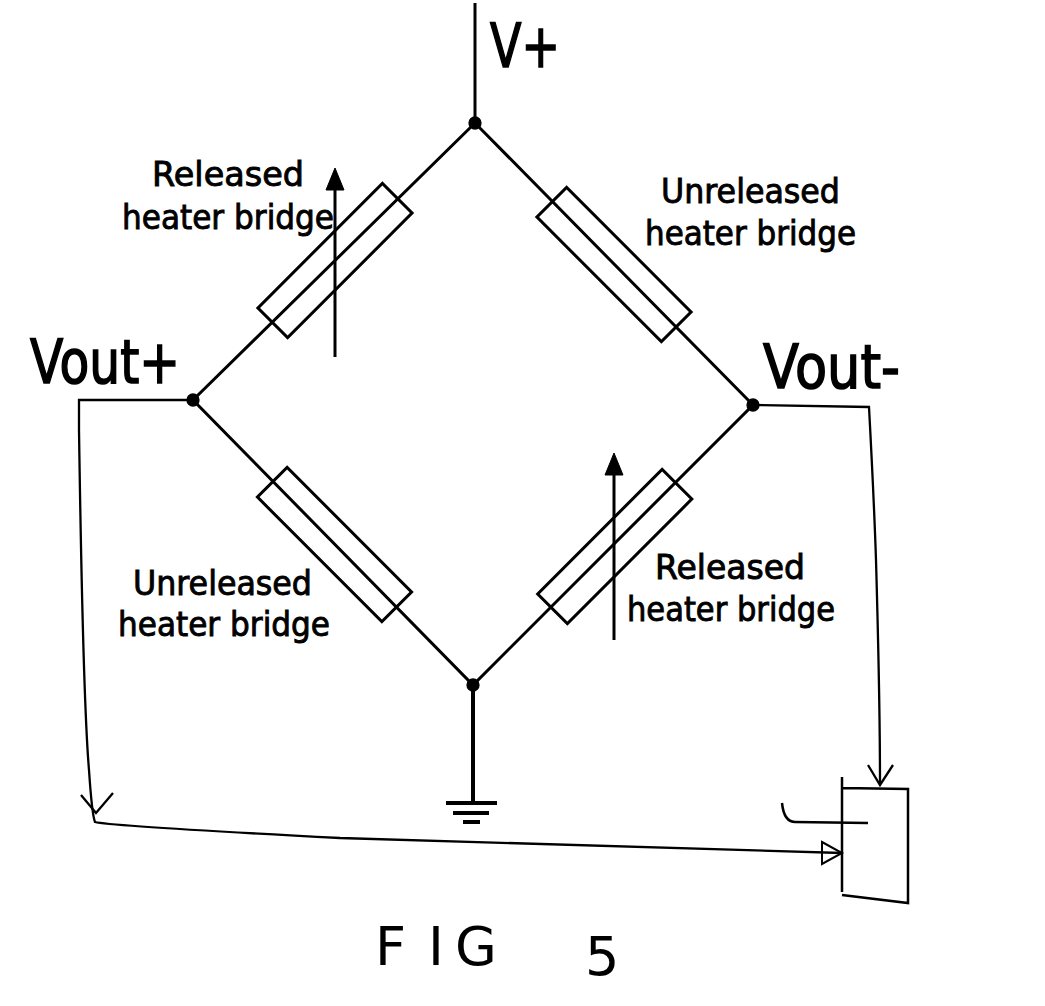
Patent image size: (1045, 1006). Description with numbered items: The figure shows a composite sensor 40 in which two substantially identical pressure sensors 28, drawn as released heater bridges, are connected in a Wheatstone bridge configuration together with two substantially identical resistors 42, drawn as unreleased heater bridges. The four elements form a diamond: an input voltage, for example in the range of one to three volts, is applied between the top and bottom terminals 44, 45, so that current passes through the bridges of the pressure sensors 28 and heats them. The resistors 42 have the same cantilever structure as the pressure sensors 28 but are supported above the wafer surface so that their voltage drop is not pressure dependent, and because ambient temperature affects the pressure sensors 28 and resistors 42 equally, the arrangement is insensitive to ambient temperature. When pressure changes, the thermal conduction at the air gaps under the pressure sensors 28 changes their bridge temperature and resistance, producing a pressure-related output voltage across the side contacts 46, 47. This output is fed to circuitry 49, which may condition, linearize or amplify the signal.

The composite sensor 40 is at (280, 98).
The pressure sensor 28 is at (355, 247).
The resistor 42 is at (630, 282).
The terminal 44 is at (487, 118).
The terminal 45 is at (483, 688).
The contact 46 is at (205, 400).
The contact 47 is at (745, 402).
The circuitry 49 is at (875, 868).